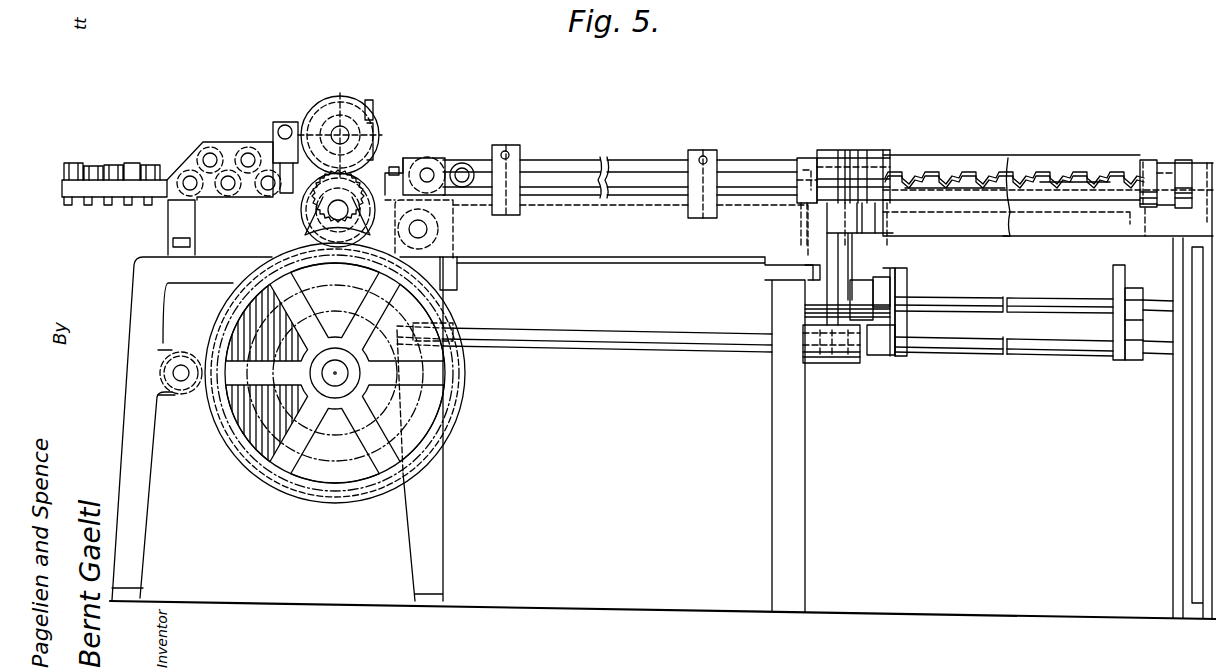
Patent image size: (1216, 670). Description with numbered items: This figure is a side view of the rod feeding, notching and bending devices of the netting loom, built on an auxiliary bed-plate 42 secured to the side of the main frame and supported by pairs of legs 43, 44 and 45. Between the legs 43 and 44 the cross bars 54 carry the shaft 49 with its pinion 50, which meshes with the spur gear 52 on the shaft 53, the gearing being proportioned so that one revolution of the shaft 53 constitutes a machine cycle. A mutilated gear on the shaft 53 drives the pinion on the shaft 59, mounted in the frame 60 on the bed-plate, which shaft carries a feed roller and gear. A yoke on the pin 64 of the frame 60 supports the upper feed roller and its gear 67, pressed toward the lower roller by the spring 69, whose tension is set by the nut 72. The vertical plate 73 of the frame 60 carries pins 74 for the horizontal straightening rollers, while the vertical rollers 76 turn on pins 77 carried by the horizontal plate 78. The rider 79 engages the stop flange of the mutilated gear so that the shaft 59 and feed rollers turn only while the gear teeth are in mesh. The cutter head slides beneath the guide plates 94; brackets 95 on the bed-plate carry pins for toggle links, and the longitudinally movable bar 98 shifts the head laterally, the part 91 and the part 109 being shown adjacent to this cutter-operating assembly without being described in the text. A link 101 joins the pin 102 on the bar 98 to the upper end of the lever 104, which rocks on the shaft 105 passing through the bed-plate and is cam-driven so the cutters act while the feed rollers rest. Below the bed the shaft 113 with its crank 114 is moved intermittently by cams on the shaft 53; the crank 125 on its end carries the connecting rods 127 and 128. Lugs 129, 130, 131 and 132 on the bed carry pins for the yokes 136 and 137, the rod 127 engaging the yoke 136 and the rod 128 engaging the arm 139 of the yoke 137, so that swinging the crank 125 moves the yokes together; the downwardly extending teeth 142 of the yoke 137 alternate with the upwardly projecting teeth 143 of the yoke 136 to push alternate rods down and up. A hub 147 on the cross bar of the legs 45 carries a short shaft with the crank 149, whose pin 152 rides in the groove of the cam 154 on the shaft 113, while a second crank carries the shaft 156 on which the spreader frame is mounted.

The auxiliary bed-plate 42 is at (625, 209).
The leg 43 is at (663, 438).
The leg 44 is at (605, 429).
The legs 45 is at (1183, 425).
The shaft 49 is at (176, 376).
The pinion 50 is at (166, 360).
The spur gear 52 is at (213, 342).
The shaft 53 is at (322, 374).
The cross bars 54 is at (240, 395).
The shaft 59 is at (328, 211).
The frame 60 is at (181, 227).
The pin 64 is at (285, 126).
The gear 67 is at (337, 100).
The spring 69 is at (374, 125).
The nut 72 is at (375, 106).
The vertical plate 73 is at (223, 148).
The pins 74 is at (193, 187).
The vertical rollers 76 is at (135, 166).
The pins 77 is at (90, 165).
The horizontal plate 78 is at (107, 198).
The rider 79 is at (315, 230).
The rod 91 is at (569, 165).
The guide plates 94 is at (393, 167).
The brackets 95 is at (508, 150).
The longitudinally movable bar 98 is at (630, 170).
The link 101 is at (448, 165).
The pin 102 is at (470, 166).
The lever 104 is at (409, 160).
The shaft 105 is at (430, 226).
The boss 109 is at (432, 160).
The shaft 113 is at (598, 334).
The crank 114 is at (470, 380).
The crank 125 is at (840, 355).
The connecting rod 127 is at (830, 253).
The connecting rod 128 is at (850, 288).
The lug 129 is at (806, 156).
The lug 130 is at (880, 162).
The lug 131 is at (1145, 165).
The lug 132 is at (1198, 162).
The yoke 136 is at (1074, 195).
The yoke 137 is at (1048, 195).
The arm 139 is at (846, 160).
The teeth 142 is at (1097, 172).
The teeth 143 is at (950, 185).
The hub 147 is at (812, 310).
The crank 149 is at (885, 282).
The pin 152 is at (897, 282).
The cam 154 is at (907, 318).
The shaft 156 is at (965, 300).